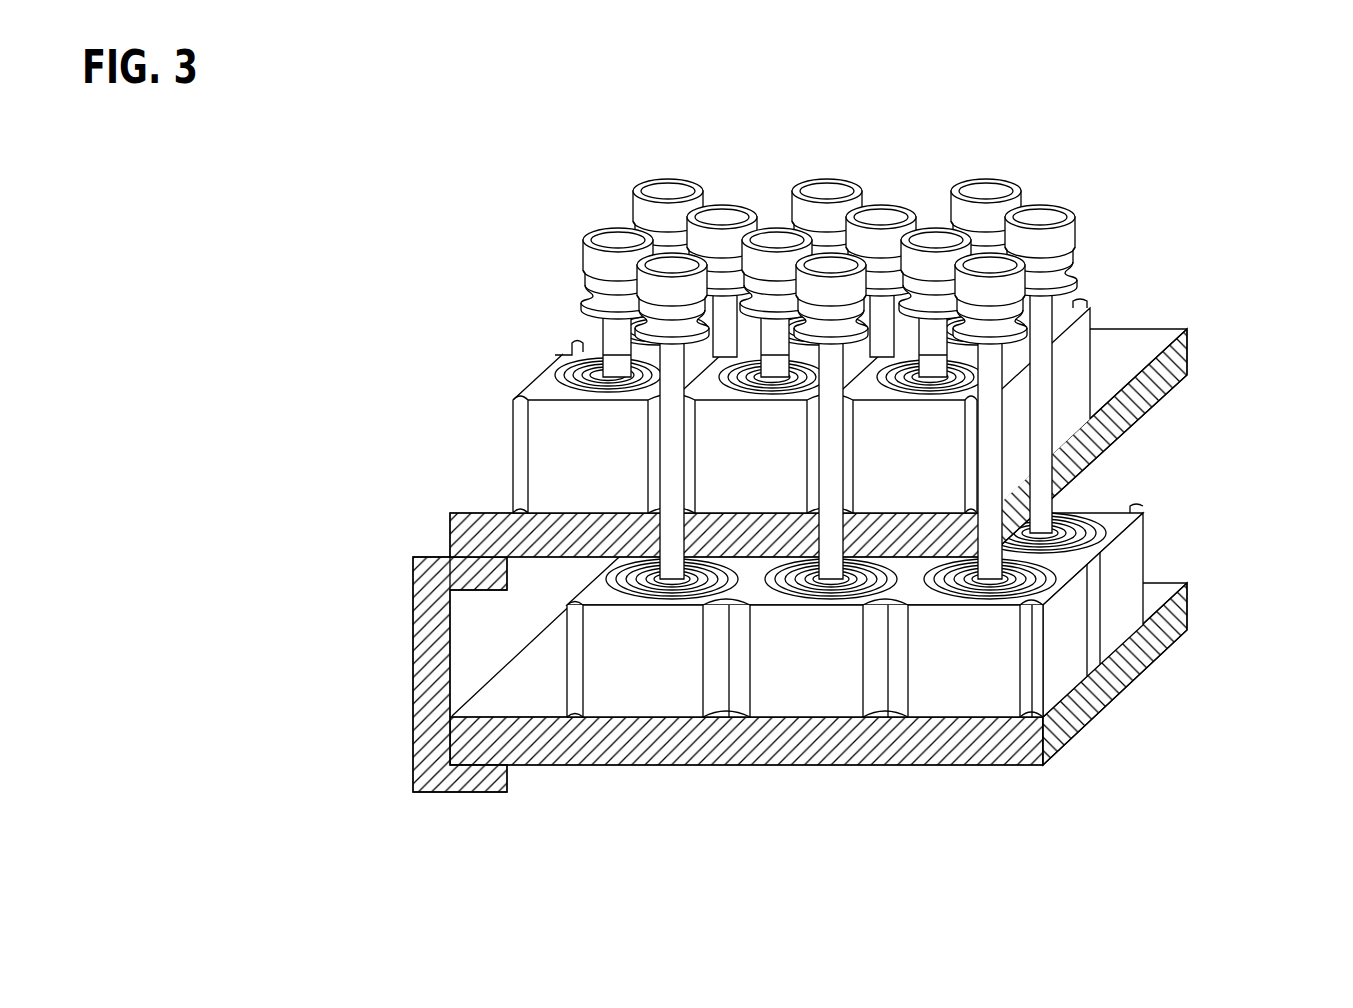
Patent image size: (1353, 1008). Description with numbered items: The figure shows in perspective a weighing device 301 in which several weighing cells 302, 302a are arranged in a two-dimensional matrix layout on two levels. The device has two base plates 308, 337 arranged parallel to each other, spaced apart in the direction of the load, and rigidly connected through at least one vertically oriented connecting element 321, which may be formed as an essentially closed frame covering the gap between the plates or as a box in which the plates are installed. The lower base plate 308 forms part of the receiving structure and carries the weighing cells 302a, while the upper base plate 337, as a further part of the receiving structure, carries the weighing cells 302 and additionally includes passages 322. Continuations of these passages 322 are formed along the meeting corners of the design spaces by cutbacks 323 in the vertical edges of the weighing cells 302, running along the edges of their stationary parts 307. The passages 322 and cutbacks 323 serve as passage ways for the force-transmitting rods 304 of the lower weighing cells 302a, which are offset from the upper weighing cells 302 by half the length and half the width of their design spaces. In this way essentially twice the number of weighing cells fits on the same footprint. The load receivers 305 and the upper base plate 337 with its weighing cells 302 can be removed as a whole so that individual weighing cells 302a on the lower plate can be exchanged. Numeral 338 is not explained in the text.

The weighing device 301 is at (488, 194).
The weighing cell 302 is at (804, 406).
The weighing cell 302a is at (855, 699).
The force-transmitting rod 304 is at (804, 421).
The load receiver 305 is at (947, 235).
The stationary part 307 is at (1022, 448).
The lower base plate 308 is at (882, 674).
The connecting element 321 is at (401, 674).
The passage 322 is at (741, 443).
The cutback 323 is at (411, 430).
The upper base plate 337 is at (1151, 443).
The lower block edge groove 338 is at (544, 749).